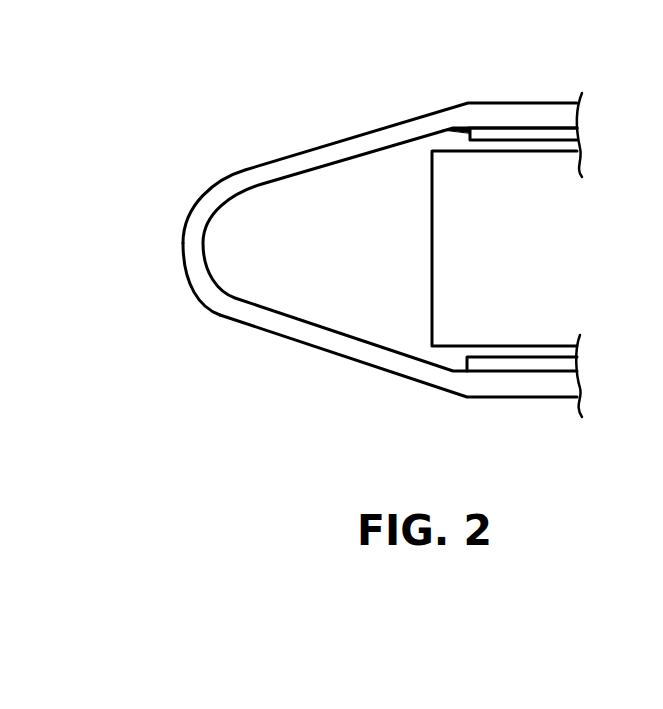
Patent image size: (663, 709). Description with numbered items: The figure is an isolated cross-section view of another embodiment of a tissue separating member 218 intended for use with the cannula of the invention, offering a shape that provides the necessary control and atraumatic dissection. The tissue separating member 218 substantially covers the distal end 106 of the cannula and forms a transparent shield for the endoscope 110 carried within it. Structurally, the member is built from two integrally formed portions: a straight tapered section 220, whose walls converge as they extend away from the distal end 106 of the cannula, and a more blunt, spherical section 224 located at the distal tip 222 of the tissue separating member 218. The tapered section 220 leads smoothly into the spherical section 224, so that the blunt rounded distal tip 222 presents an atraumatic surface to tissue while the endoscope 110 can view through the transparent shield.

The distal end 106 is at (440, 131).
The endoscope 110 is at (442, 348).
The tissue separating member 218 is at (493, 100).
The tapered section 220 is at (285, 338).
The distal tip 222 is at (183, 265).
The spherical section 224 is at (190, 208).